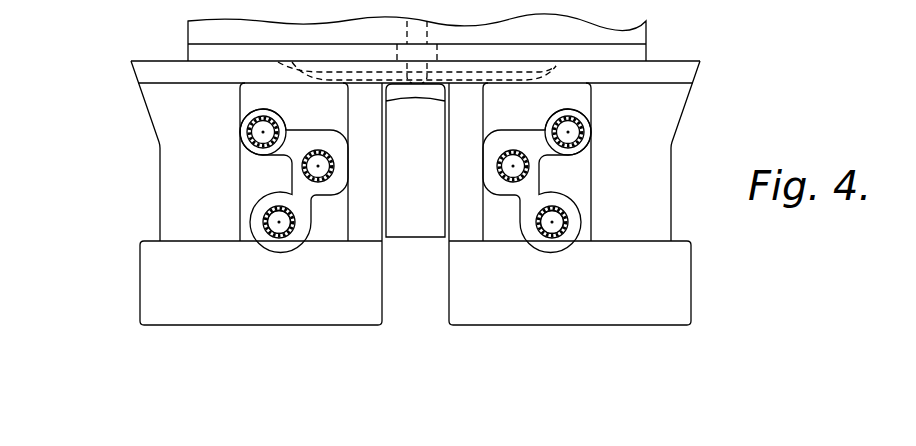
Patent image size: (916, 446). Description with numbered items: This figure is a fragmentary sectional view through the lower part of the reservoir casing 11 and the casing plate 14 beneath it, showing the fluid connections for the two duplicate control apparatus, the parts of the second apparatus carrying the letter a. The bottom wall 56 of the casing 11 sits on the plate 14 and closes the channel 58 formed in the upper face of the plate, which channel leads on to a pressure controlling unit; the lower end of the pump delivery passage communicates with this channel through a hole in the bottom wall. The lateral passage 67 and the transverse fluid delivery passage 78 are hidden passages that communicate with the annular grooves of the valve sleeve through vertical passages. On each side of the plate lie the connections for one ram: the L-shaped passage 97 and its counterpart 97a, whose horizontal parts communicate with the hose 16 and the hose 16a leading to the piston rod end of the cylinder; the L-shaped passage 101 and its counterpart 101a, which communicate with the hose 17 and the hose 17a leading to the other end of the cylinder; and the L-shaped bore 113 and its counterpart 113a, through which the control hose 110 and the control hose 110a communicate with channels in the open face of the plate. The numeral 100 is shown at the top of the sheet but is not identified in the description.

The reservoir casing 11 is at (647, 34).
The plate 14 is at (138, 84).
The bottom wall 56 is at (648, 53).
The channel 58 is at (417, 84).
The lateral passage 67 is at (458, 70).
The transverse fluid delivery passage 78 is at (487, 82).
The L-shaped passage 97 is at (521, 167).
The L-shaped passage 97a is at (314, 164).
The assembly 100 is at (594, 162).
The control hose 110 is at (584, 127).
The control hose 110a is at (249, 124).
The L-shaped bore 113 is at (554, 127).
The L-shaped bore 113a is at (279, 126).
The hose 16 is at (504, 178).
The hose 16a is at (329, 177).
The hose 17 is at (532, 225).
The hose 17a is at (297, 220).
The L-shaped passage 101 is at (549, 231).
The L-shaped passage 101a is at (288, 232).